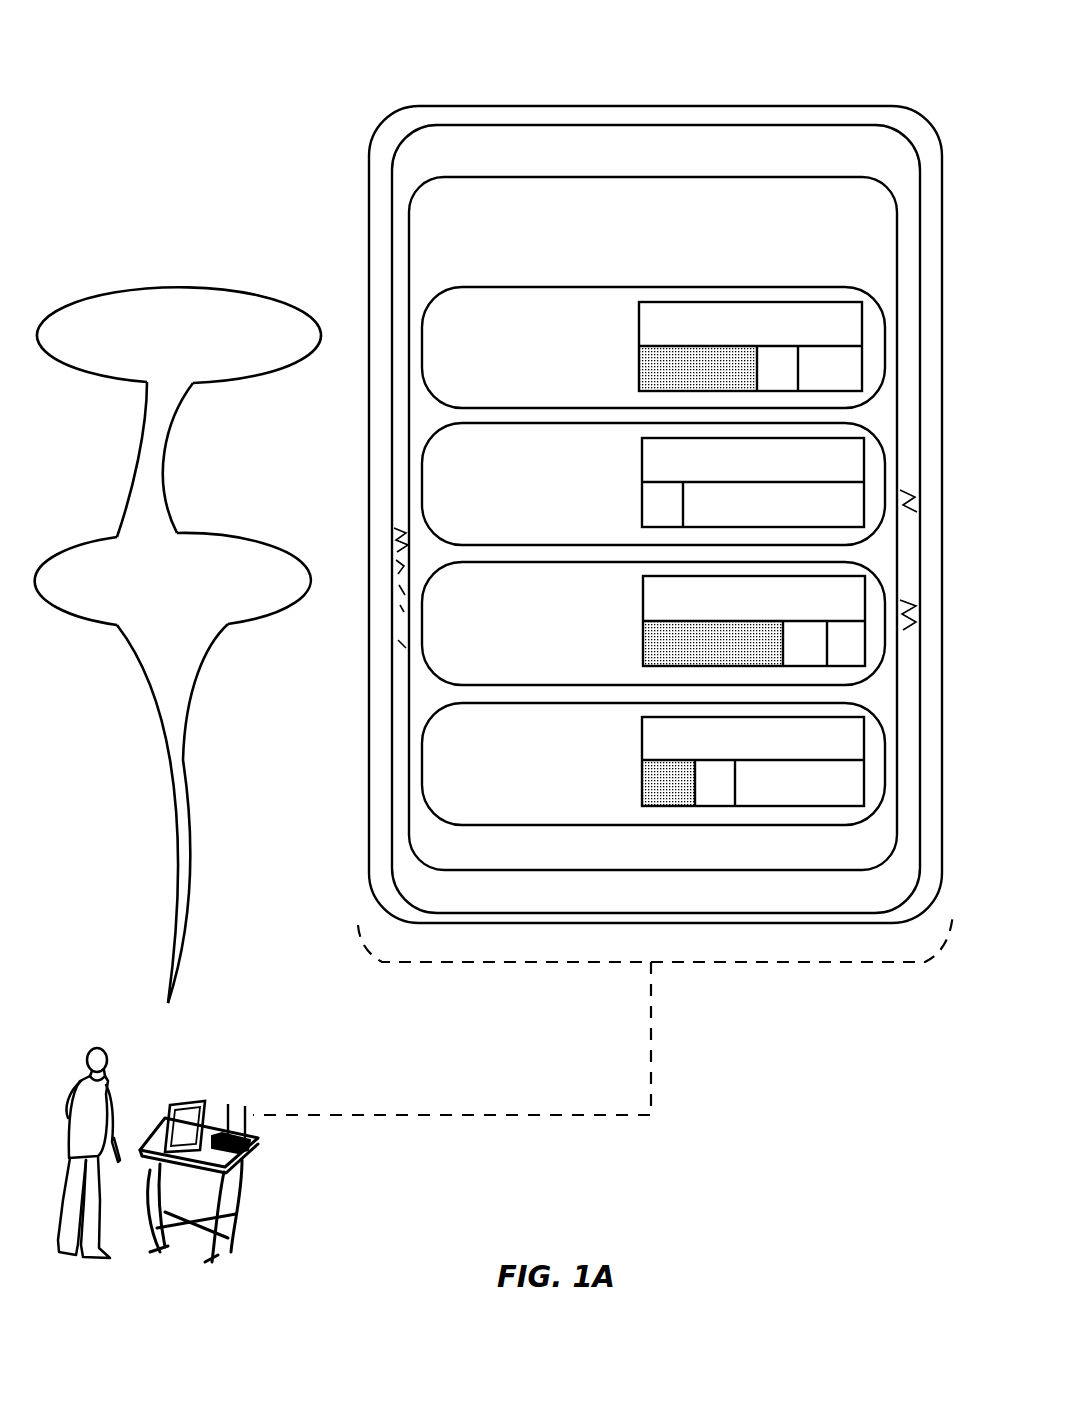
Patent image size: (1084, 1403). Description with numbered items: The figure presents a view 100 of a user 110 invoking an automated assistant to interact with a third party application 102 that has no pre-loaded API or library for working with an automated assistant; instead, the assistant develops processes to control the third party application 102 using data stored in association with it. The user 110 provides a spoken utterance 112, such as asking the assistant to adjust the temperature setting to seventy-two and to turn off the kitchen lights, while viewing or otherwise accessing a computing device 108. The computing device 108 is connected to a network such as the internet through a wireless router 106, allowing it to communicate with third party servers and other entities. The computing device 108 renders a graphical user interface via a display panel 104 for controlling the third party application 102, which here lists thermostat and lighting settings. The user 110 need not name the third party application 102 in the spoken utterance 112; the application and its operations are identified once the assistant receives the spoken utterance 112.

The view 100 is at (193, 97).
The third party application 102 is at (669, 254).
The display panel 104 is at (838, 168).
The wireless router 106 is at (243, 1106).
The computing device 108 is at (168, 1110).
The user 110 is at (86, 1032).
The spoken utterance 112 is at (241, 287).